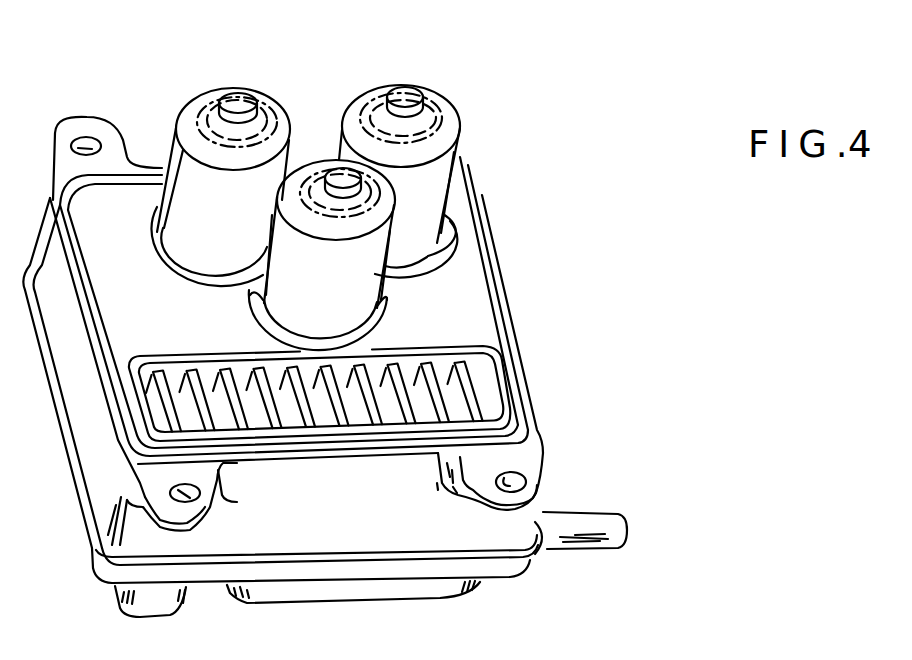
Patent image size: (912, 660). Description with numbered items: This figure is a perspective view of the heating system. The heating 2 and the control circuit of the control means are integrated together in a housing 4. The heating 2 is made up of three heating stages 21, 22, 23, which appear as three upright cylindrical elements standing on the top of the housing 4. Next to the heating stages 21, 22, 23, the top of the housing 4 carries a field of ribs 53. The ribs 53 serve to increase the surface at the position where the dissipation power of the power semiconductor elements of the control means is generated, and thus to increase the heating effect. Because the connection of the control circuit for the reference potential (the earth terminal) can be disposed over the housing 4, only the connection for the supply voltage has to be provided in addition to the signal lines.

The heating 2 is at (370, 175).
The heating stage 21 is at (190, 100).
The heating stage 22 is at (372, 257).
The heating stage 23 is at (452, 108).
The housing 4 is at (513, 277).
The ribs 53 is at (463, 392).